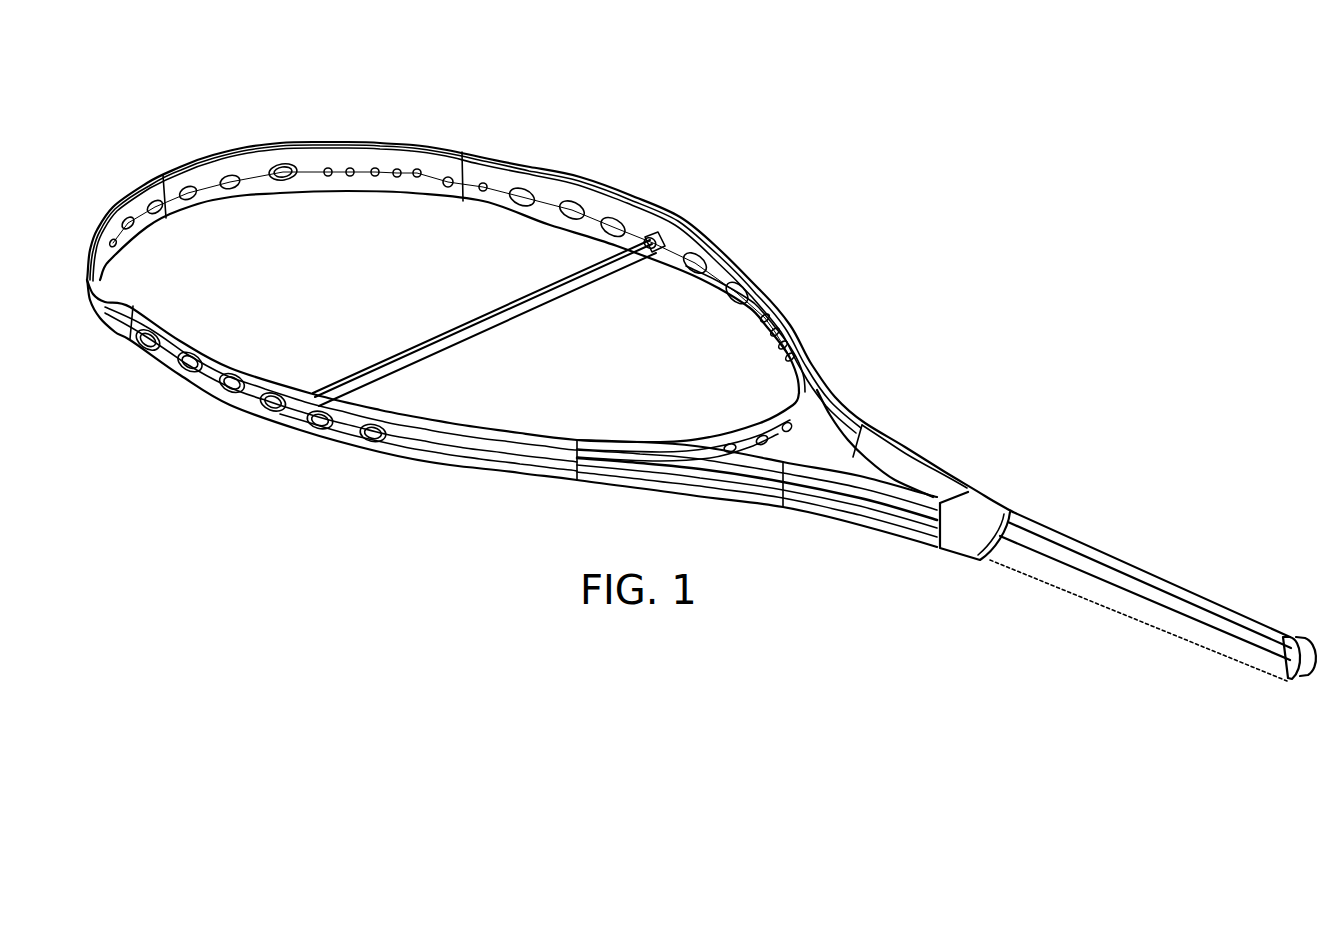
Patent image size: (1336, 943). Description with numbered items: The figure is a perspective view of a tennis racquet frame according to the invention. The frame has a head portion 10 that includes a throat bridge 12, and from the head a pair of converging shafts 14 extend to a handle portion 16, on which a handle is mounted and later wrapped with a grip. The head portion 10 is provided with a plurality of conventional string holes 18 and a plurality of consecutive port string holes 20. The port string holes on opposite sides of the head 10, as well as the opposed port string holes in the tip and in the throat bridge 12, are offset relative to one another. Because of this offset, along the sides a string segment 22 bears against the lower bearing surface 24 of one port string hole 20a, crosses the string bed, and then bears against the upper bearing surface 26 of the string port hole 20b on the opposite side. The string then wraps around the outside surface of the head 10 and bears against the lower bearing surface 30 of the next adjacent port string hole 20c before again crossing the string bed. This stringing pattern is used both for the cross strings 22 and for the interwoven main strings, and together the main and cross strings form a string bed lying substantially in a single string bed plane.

The head portion 10 is at (620, 193).
The throat bridge 12 is at (770, 418).
The converging shafts 14 is at (887, 437).
The handle portion 16 is at (1093, 595).
The conventional string holes 18 is at (420, 172).
The port string holes 20 is at (364, 432).
The port string hole 20a is at (648, 238).
The string port hole 20b is at (322, 437).
The port string hole 20c is at (262, 413).
The string segment 22 is at (576, 297).
The lower bearing surface 24 is at (666, 258).
The upper bearing surface 26 is at (314, 413).
The lower bearing surface 30 is at (277, 393).